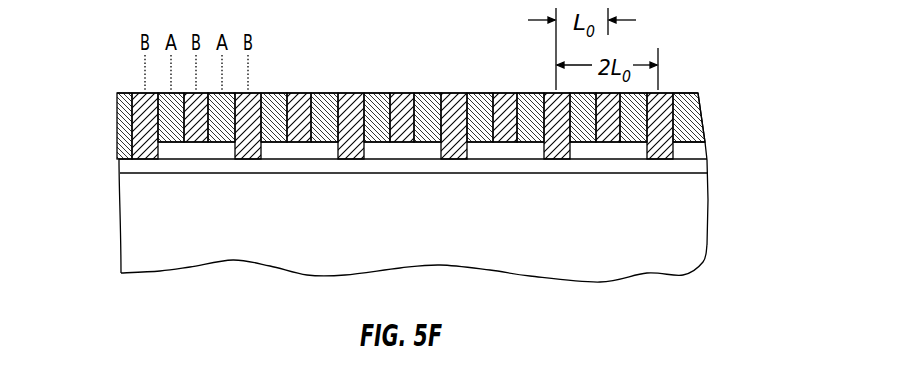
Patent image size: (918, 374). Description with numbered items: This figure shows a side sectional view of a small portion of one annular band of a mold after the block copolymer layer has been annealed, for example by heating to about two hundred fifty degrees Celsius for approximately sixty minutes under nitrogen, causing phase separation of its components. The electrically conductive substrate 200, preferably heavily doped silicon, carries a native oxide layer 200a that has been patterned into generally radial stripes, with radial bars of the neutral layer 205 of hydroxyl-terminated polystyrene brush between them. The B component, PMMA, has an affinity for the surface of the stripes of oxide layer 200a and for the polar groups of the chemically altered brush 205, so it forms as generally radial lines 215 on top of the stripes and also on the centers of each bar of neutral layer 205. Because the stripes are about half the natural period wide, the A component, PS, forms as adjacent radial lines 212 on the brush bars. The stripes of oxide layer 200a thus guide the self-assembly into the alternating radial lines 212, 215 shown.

The substrate 200 is at (132, 227).
The oxide layer 200a is at (124, 169).
The neutral layer 205 is at (130, 150).
The radial lines 212 is at (171, 132).
The radial lines 215 is at (137, 100).